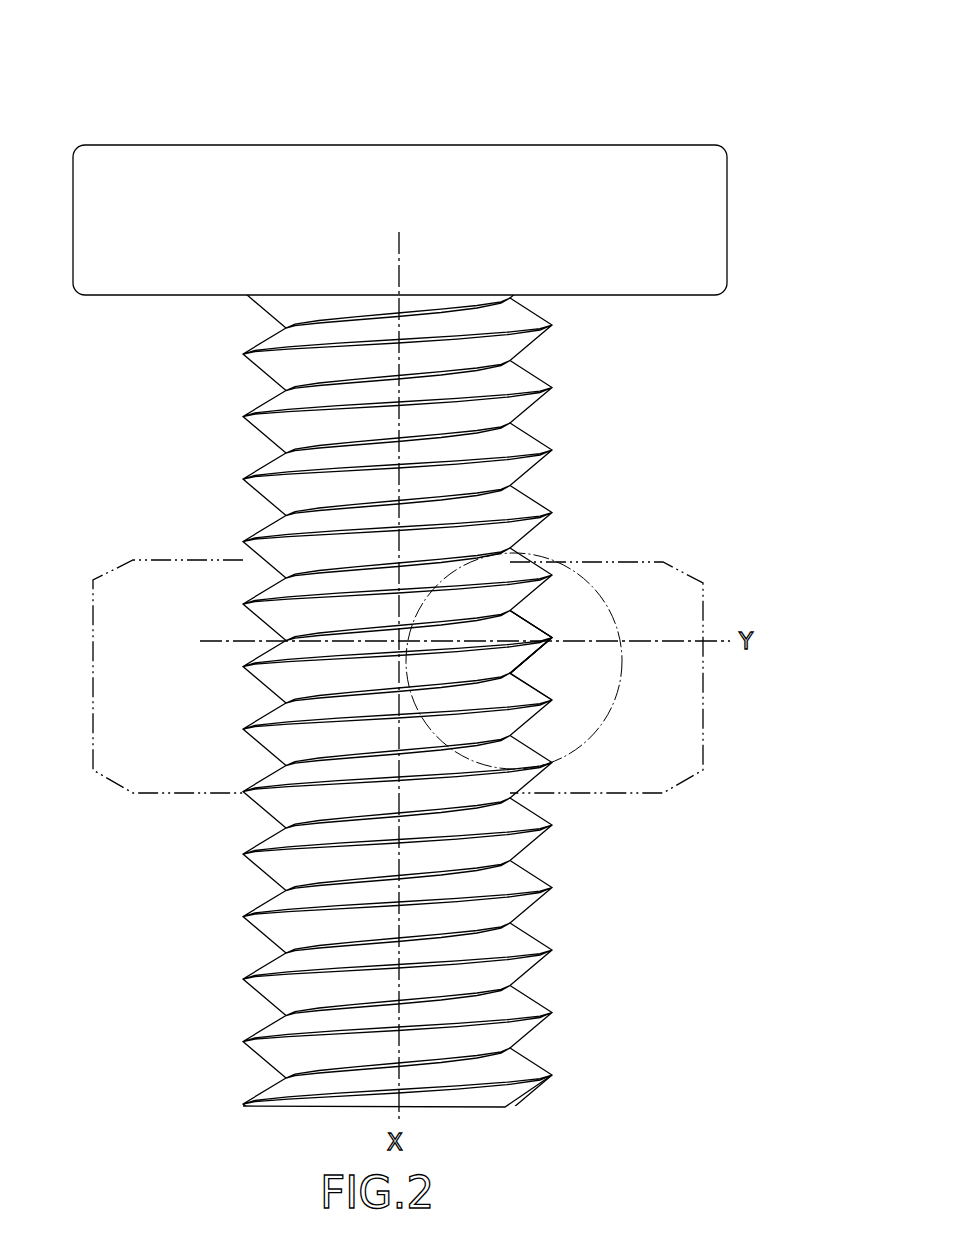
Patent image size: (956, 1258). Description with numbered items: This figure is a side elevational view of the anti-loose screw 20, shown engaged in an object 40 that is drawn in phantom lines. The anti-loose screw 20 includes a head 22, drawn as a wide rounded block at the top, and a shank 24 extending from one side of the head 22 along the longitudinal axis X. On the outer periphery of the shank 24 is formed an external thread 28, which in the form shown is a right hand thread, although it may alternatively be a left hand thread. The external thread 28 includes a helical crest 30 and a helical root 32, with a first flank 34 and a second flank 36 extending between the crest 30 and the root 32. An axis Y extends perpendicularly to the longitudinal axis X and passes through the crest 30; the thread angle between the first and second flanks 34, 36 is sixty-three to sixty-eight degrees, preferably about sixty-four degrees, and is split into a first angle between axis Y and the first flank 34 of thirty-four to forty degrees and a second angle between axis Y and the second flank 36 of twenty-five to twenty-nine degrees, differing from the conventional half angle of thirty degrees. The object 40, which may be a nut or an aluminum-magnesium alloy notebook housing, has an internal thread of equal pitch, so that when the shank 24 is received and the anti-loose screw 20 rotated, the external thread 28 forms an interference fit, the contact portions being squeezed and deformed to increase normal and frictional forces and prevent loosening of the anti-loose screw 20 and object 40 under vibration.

The anti-loose screw 20 is at (740, 123).
The head 22 is at (703, 220).
The shank 24 is at (475, 1108).
The external thread 28 is at (570, 477).
The crest 30 is at (548, 640).
The root 32 is at (515, 673).
The first flank 34 is at (540, 648).
The second flank 36 is at (533, 628).
The object 40 is at (705, 605).